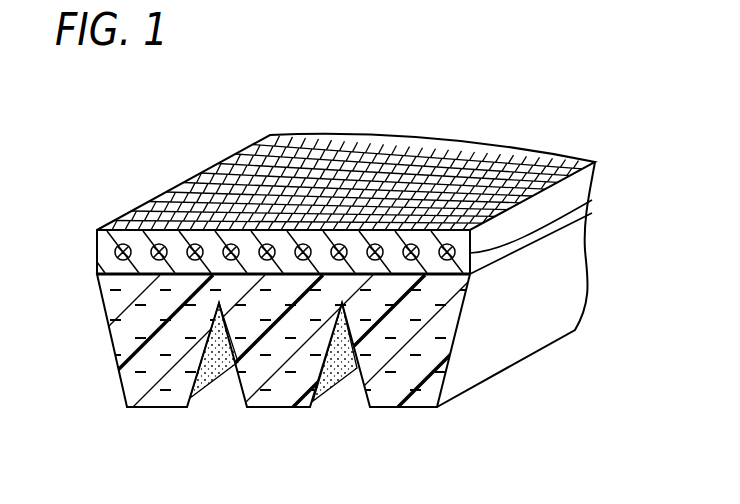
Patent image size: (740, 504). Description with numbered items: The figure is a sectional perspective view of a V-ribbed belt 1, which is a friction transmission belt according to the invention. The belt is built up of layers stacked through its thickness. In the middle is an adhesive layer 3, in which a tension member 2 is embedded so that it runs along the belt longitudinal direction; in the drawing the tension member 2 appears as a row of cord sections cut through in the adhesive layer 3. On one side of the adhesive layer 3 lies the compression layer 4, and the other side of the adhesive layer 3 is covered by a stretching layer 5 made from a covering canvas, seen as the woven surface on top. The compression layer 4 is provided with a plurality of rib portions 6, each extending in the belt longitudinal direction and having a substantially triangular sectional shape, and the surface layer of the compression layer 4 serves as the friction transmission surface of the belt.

The V-ribbed belt 1 is at (330, 239).
The tension member 2 is at (592, 200).
The adhesive layer 3 is at (108, 268).
The compression layer 4 is at (309, 366).
The stretching layer 5 is at (283, 229).
The rib portions 6 is at (147, 395).